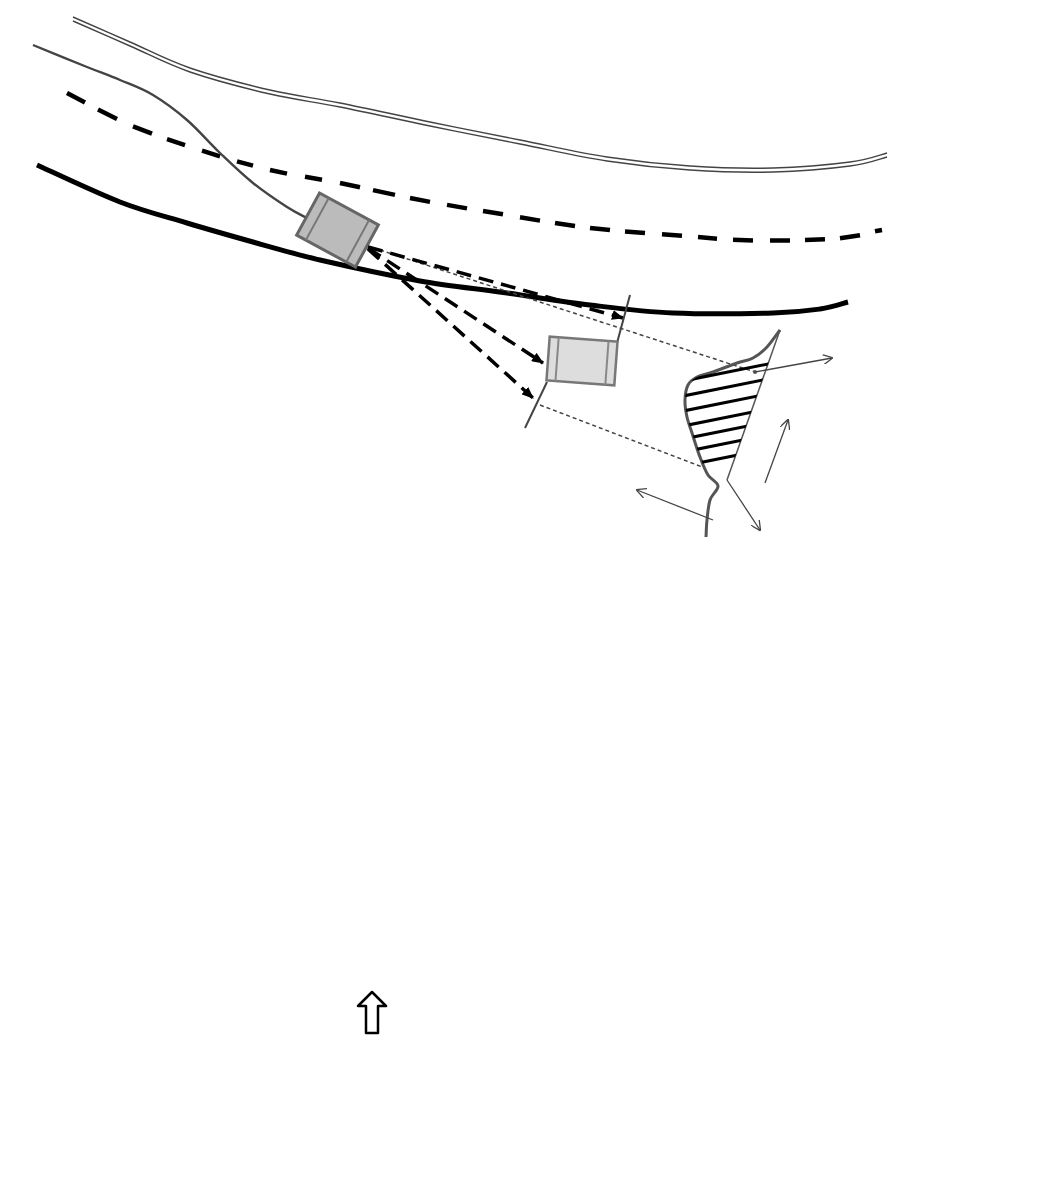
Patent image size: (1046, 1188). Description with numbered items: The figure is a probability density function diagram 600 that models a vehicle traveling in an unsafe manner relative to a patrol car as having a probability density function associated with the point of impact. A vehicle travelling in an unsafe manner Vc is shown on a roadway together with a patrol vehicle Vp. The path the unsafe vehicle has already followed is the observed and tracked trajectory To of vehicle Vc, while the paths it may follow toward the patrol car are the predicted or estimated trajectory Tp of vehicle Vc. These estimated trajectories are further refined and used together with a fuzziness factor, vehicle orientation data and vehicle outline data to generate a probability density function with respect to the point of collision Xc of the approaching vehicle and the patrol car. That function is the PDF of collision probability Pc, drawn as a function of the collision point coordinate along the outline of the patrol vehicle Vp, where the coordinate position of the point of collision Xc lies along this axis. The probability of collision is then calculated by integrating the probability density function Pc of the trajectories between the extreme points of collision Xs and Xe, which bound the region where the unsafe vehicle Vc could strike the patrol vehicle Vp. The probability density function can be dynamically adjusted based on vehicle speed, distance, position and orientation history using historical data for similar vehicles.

The probability density function diagram 600 is at (460, 525).
The vehicle travelling in an unsafe manner Vc is at (338, 230).
The patrol vehicle Vp is at (577, 361).
The observed and tracked trajectory of vehicle Vc To is at (170, 131).
The predicted or estimated trajectory of vehicle Vc Tp is at (495, 322).
The probability density function of collision probability Pc is at (723, 433).
The coordinate position of point of collision Xc is at (779, 451).
The extreme point of collision Xe is at (806, 361).
The extreme point of collision Xs is at (758, 516).